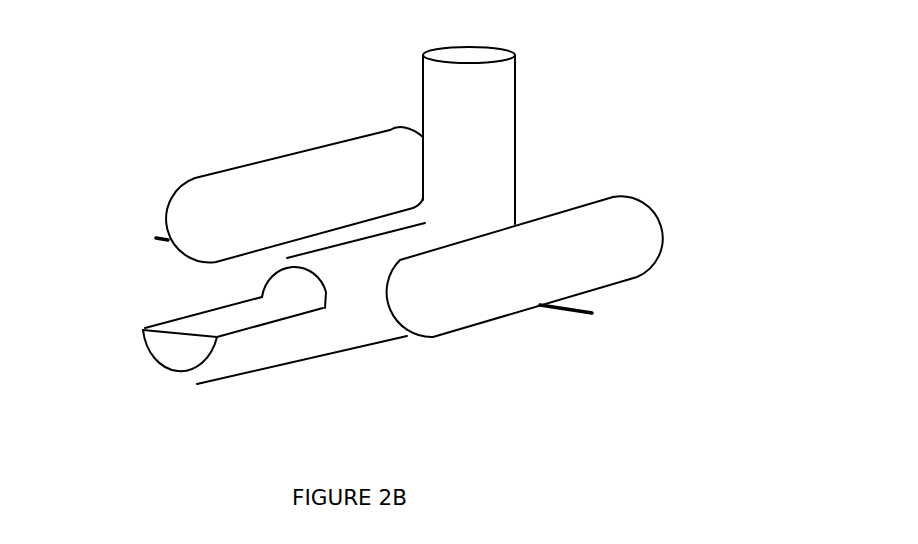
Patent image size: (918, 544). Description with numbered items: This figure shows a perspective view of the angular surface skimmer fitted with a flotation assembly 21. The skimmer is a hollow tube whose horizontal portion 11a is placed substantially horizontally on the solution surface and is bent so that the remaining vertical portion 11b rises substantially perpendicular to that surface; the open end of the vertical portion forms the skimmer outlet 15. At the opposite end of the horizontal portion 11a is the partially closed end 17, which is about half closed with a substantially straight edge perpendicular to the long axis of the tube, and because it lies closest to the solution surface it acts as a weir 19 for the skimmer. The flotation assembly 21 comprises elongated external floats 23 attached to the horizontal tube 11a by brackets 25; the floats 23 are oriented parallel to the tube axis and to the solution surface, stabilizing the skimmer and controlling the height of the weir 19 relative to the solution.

The horizontal portion of the tube 11a is at (338, 363).
The vertical portion of the tube 11b is at (527, 142).
The skimmer outlet 15 is at (490, 45).
The partially closed end 17 is at (168, 362).
The weir 19 is at (197, 332).
The flotation assembly 21 is at (337, 63).
The external floats 23 is at (243, 163).
The brackets 25 is at (577, 316).